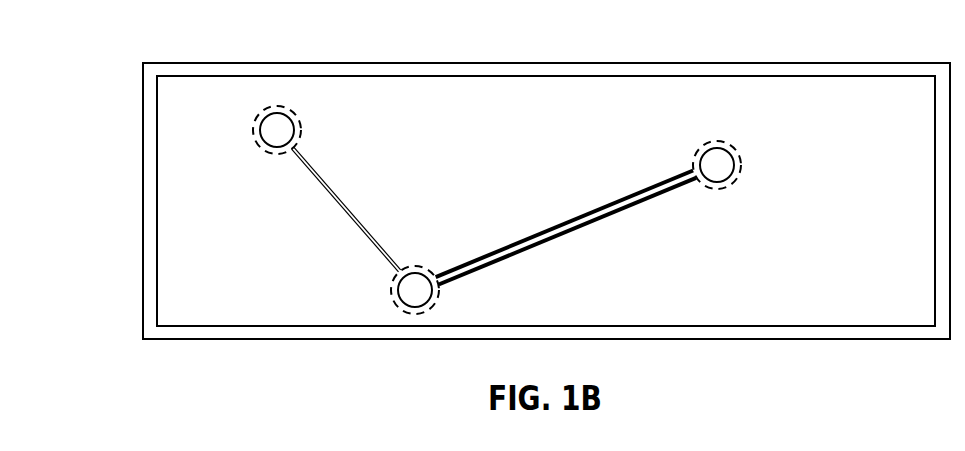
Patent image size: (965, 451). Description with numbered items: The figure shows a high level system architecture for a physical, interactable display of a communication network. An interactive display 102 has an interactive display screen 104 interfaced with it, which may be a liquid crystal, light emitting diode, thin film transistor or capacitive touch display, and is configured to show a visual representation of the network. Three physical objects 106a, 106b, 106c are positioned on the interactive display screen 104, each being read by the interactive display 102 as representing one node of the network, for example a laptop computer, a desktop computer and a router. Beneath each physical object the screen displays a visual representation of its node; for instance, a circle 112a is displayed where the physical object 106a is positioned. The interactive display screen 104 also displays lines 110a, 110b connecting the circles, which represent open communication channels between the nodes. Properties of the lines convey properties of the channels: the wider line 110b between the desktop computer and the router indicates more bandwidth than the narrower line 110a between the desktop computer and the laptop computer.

The interactive display 102 is at (143, 90).
The interactive display screen 104 is at (157, 151).
The physical object 106a is at (277, 113).
The physical object 106b is at (416, 308).
The physical object 106c is at (740, 163).
The line 110a is at (348, 202).
The line 110b is at (580, 233).
The circle 112a is at (260, 148).